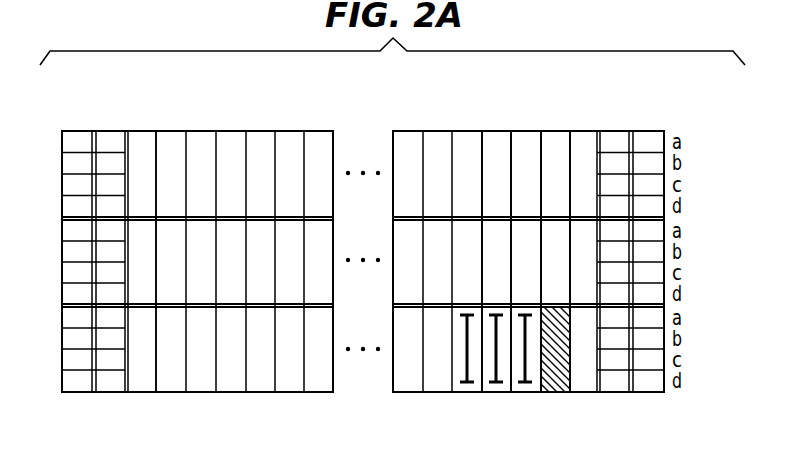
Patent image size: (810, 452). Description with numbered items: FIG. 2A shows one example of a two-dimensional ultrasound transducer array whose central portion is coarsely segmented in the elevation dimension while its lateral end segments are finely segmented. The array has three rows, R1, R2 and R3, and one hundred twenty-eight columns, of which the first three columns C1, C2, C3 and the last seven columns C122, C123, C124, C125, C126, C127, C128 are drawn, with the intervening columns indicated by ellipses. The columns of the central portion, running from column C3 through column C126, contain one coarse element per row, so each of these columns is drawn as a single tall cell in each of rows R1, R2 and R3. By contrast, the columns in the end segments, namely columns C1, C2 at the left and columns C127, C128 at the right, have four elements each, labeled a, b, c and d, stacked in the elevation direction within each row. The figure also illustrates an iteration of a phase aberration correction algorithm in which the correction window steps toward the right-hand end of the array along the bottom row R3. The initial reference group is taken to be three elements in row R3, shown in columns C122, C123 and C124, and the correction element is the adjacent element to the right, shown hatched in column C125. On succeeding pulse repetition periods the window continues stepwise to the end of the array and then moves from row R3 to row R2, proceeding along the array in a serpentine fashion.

The column one C1 is at (72, 131).
The column two C2 is at (104, 131).
The column three C3 is at (135, 131).
The column one hundred twenty-two C122 is at (463, 131).
The column one hundred twenty-three C123 is at (493, 131).
The column one hundred twenty-four C124 is at (524, 131).
The column one hundred twenty-five C125 is at (552, 131).
The column one hundred twenty-six C126 is at (583, 131).
The column one hundred twenty-seven C127 is at (612, 131).
The column one hundred twenty-eight C128 is at (643, 131).
The row one R1 is at (688, 131).
The row two R2 is at (688, 220).
The row three R3 is at (688, 307).